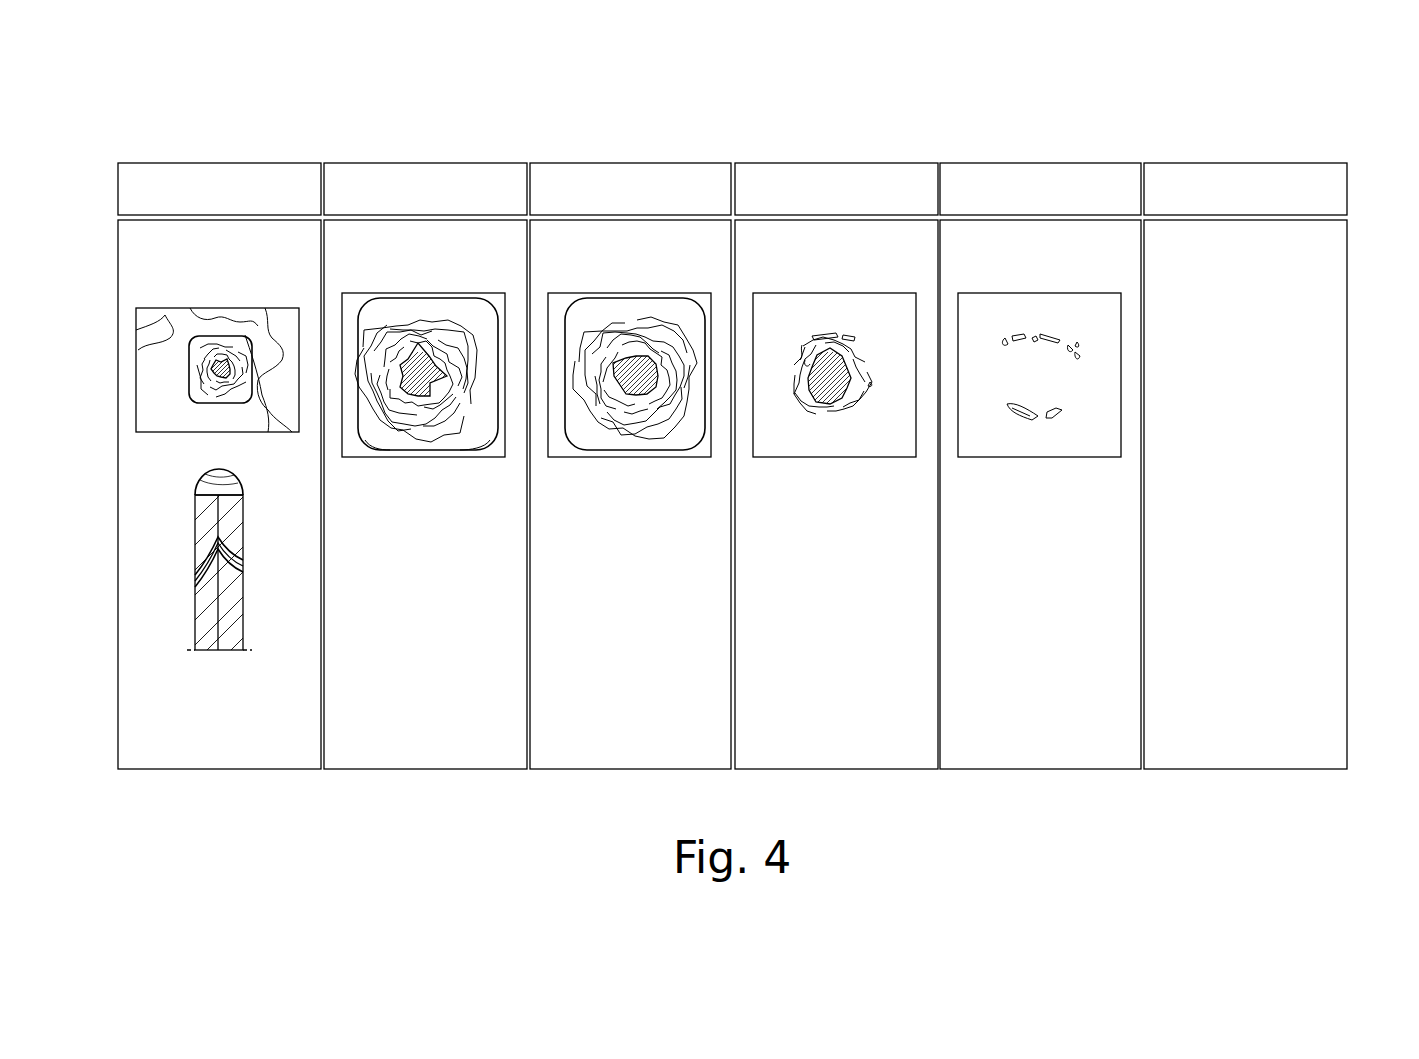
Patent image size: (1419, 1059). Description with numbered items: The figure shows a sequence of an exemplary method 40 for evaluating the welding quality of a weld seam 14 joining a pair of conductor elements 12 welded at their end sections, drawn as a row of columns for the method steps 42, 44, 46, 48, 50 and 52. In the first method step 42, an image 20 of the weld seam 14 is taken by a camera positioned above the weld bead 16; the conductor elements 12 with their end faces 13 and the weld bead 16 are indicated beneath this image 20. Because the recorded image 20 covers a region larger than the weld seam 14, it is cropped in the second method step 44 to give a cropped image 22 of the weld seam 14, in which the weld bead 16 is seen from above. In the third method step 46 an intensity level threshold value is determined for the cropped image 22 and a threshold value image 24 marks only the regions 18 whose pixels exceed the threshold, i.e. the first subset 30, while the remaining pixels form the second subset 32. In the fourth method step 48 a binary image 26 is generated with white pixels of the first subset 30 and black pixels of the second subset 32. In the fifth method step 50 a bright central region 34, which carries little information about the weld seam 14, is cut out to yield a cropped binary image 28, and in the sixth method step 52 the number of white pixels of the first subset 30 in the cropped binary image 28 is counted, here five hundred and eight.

The method 40 is at (1338, 133).
The first method step 42 is at (219, 466).
The second method step 44 is at (425, 466).
The third method step 46 is at (630, 466).
The fourth method step 48 is at (836, 466).
The fifth method step 50 is at (1040, 466).
The sixth method step 52 is at (1245, 466).
The conductor element 12 is at (203, 606).
The end face 13 is at (365, 453).
The weld seam 14 is at (193, 488).
The weld bead 16 is at (206, 479).
The region 18 is at (638, 392).
The image 20 is at (136, 370).
The cropped image 22 is at (452, 458).
The threshold value image 24 is at (637, 296).
The binary image 26 is at (832, 296).
The cropped binary image 28 is at (1052, 296).
The first subset 30 is at (846, 424).
The second subset 32 is at (897, 383).
The central region 34 is at (1035, 372).